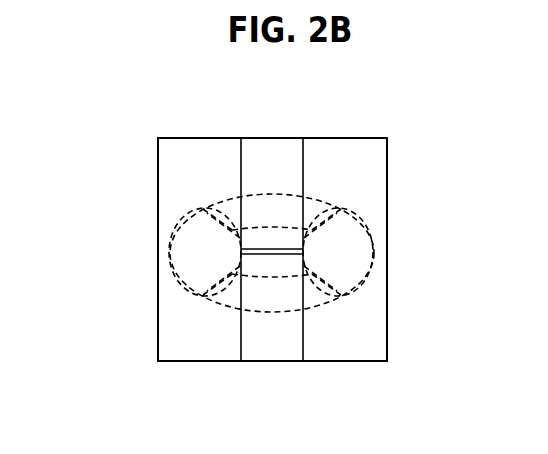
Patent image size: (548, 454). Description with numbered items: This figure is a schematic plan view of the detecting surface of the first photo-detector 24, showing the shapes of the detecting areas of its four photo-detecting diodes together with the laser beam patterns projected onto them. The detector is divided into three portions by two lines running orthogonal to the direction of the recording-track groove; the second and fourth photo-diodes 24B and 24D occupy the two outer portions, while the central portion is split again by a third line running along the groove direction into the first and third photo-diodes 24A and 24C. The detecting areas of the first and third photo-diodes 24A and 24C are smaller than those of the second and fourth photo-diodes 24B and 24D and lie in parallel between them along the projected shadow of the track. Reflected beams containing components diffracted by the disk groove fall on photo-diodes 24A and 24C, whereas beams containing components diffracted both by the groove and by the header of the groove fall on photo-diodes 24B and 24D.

The first photo-detector 24 is at (387, 138).
The first photo-diode 24A is at (285, 152).
The second photo-diode 24B is at (373, 328).
The third photo-diode 24C is at (290, 347).
The fourth photo-diode 24D is at (168, 175).